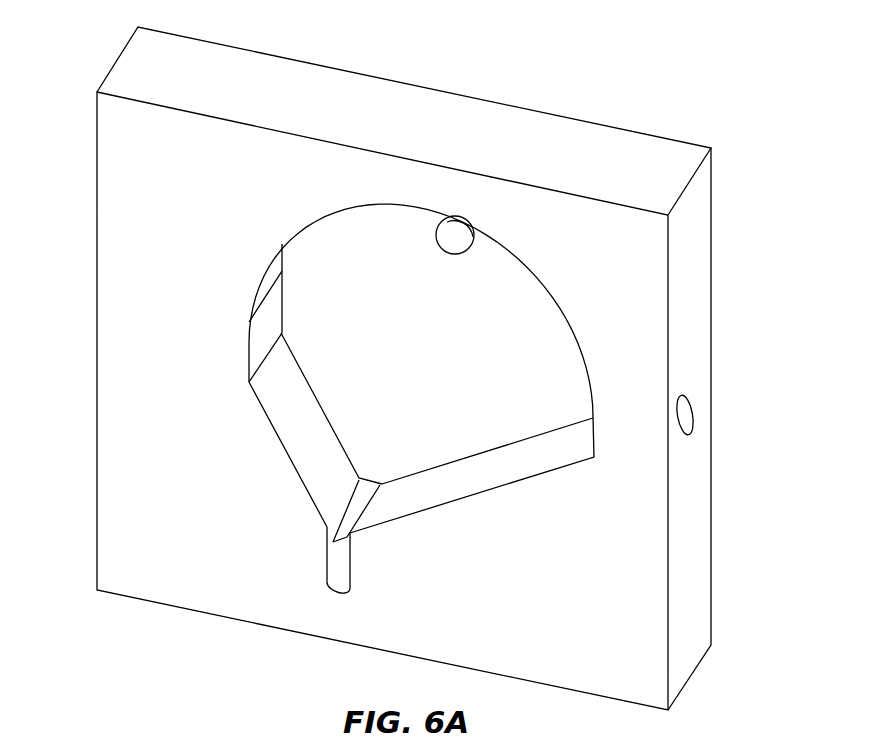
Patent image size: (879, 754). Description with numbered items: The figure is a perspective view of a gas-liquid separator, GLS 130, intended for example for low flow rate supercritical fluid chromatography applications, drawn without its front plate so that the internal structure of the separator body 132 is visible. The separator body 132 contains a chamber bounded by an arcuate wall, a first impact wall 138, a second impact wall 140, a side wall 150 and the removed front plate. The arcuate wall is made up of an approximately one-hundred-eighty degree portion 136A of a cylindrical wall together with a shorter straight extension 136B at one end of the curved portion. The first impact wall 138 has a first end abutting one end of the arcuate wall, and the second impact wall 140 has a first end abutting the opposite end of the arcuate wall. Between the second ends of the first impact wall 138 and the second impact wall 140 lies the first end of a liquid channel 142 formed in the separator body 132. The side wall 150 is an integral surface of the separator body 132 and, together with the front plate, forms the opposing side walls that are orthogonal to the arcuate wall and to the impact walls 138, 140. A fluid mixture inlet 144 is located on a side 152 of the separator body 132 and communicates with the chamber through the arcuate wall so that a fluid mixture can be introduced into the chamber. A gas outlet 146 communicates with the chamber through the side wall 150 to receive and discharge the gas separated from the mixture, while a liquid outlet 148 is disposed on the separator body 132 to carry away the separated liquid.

The GLS 130 is at (750, 246).
The separator body 132 is at (97, 213).
The approximately 180° portion of a cylindrical wall 136A is at (275, 268).
The straight extension 136B is at (273, 315).
The first impact wall 138 is at (482, 460).
The second impact wall 140 is at (312, 425).
The liquid channel 142 is at (335, 528).
The fluid mixture inlet 144 is at (691, 420).
The gas outlet 146 is at (448, 241).
The liquid outlet 148 is at (349, 585).
The side wall 150 is at (481, 363).
The side of the separator body 152 is at (686, 560).